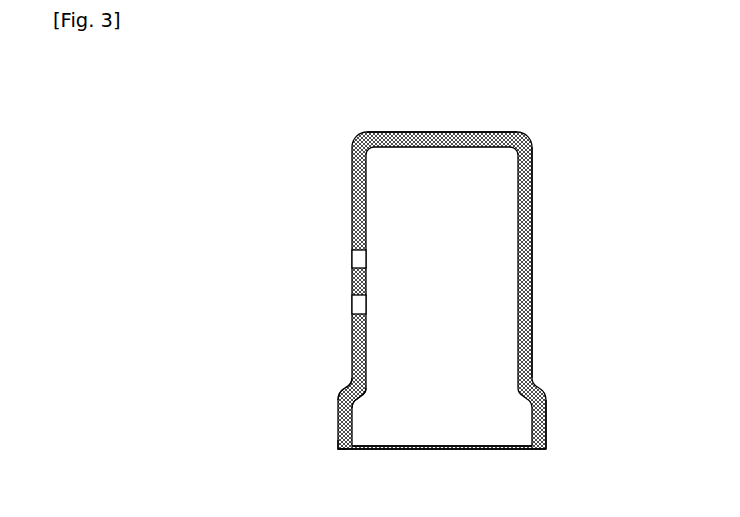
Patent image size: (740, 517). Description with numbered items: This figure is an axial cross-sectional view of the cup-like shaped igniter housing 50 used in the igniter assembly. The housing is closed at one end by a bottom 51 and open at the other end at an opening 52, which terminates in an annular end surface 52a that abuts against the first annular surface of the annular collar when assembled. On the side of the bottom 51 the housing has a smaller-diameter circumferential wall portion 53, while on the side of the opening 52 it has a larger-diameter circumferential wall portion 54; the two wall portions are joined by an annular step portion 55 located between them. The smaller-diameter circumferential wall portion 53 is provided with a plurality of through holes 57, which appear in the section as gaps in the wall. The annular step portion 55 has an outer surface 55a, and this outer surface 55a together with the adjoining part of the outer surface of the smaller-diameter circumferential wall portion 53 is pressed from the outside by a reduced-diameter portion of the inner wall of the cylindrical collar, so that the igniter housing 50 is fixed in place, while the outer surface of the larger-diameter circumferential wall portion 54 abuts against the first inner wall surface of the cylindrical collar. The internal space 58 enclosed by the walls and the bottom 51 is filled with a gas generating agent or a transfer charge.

The igniter housing 50 is at (417, 131).
The bottom 51 is at (478, 131).
The opening 52 is at (445, 450).
The annular end surface 52a is at (339, 450).
The smaller-diameter circumferential wall portion 53 is at (533, 217).
The larger-diameter circumferential wall portion 54 is at (547, 420).
The annular step portion 55 is at (360, 405).
The outer surface 55a is at (347, 394).
The through holes 57 is at (357, 258).
The internal space 58 is at (455, 191).